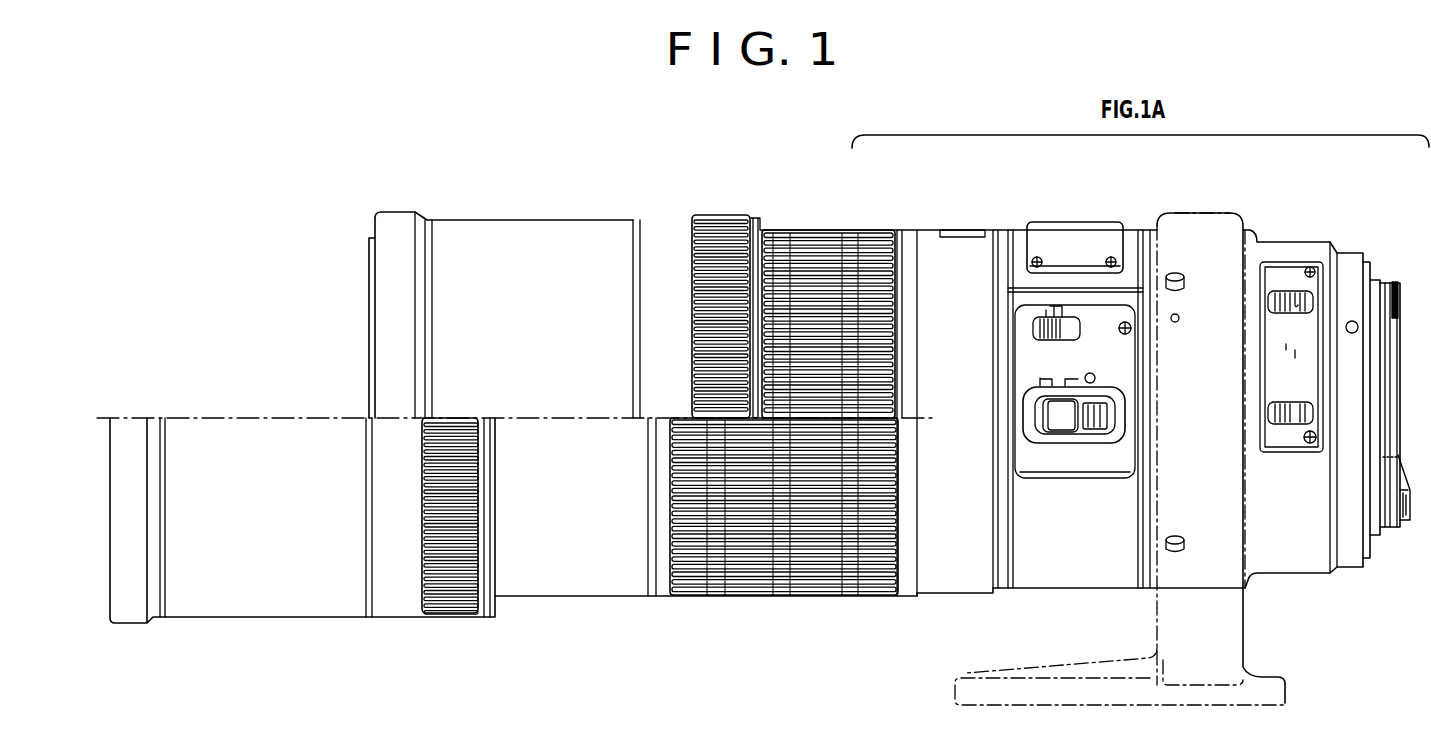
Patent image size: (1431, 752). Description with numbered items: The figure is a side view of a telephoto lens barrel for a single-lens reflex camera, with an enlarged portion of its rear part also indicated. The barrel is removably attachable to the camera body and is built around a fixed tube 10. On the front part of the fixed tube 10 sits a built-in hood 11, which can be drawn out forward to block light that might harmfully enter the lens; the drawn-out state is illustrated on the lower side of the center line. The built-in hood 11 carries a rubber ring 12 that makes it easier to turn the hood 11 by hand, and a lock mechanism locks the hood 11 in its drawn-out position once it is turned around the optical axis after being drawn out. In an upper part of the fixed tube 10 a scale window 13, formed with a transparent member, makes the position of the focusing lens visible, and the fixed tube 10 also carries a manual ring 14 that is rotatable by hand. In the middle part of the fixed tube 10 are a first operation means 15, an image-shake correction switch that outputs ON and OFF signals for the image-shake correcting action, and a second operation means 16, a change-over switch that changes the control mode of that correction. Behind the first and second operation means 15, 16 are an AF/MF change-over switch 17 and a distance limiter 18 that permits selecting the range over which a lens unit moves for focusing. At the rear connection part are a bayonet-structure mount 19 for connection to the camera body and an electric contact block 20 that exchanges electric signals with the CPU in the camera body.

The fixed tube 10 is at (1123, 557).
The built-in hood 11 is at (527, 253).
The rubber ring 12 is at (722, 215).
The scale window 13 is at (960, 230).
The manual ring 14 is at (779, 583).
The first operation means 15 is at (1067, 440).
The second operation means 16 is at (1040, 330).
The AF/MF change-over switch 17 is at (1296, 293).
The distance limiter 18 is at (1272, 420).
The mount 19 is at (1392, 282).
The electric contact block 20 is at (1403, 530).